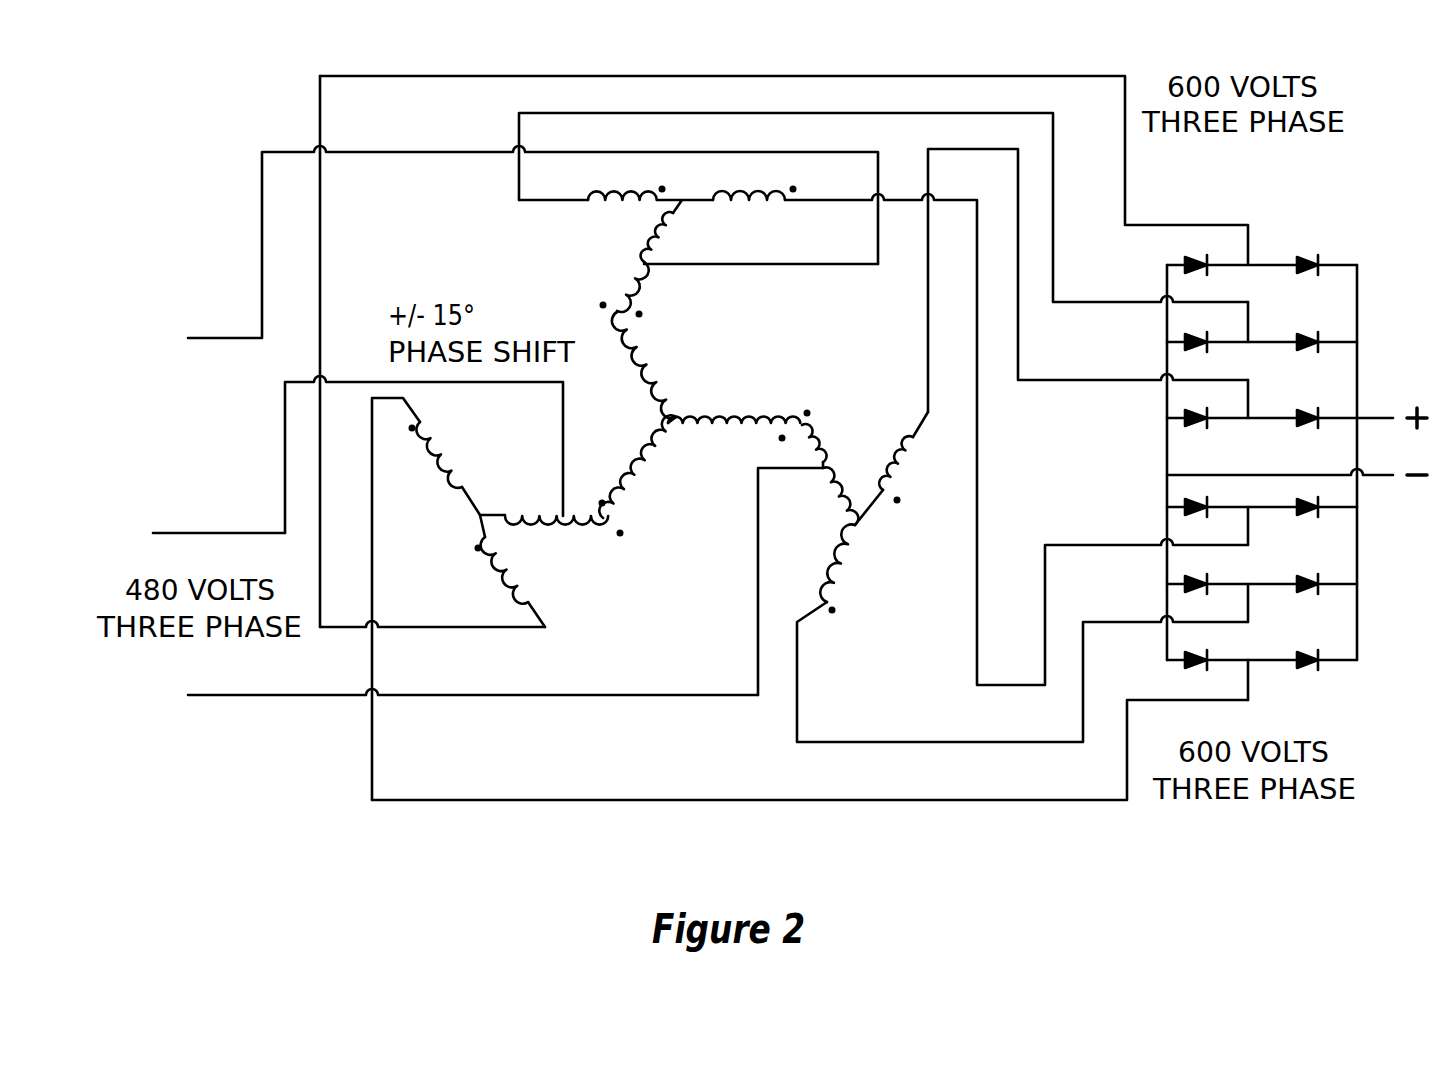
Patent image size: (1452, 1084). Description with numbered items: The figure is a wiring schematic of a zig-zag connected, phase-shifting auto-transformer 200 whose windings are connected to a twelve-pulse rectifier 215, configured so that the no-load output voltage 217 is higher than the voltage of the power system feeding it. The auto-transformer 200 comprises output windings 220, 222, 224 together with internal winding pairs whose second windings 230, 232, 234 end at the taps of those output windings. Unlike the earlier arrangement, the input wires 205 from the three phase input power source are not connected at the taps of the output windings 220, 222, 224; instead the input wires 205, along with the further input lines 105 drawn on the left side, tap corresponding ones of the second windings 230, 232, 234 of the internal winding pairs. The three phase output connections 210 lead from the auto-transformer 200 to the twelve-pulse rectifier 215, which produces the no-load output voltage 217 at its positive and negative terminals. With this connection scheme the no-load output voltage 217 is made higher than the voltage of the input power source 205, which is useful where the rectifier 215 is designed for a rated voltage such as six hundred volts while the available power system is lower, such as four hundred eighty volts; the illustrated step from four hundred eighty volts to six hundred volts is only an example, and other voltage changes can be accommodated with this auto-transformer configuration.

The auto-transformer 200 is at (163, 155).
The input wires 205 is at (210, 338).
The 480 volt three phase input lines 105 is at (228, 525).
The 600 volt three phase output lines 210 is at (1187, 225).
The twelve-pulse rectifier 215 is at (1373, 260).
The no-load output voltage 217 is at (1448, 361).
The output winding 220 is at (755, 203).
The second winding of internal winding pair 230 is at (627, 283).
The second winding of internal winding pair 232 is at (825, 457).
The output winding 222 is at (920, 450).
The output winding 224 is at (453, 467).
The second winding of internal winding pair 234 is at (580, 533).